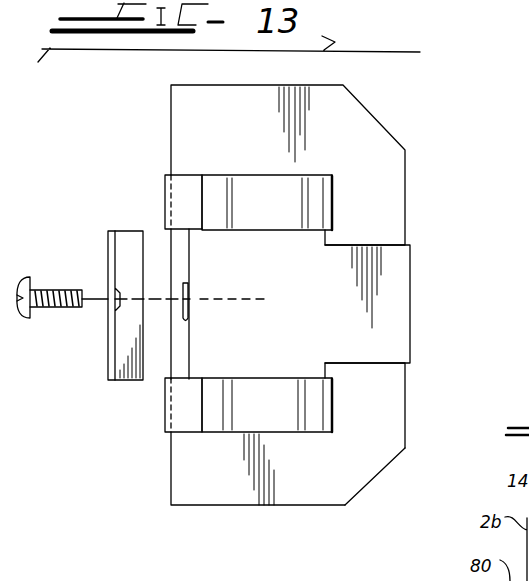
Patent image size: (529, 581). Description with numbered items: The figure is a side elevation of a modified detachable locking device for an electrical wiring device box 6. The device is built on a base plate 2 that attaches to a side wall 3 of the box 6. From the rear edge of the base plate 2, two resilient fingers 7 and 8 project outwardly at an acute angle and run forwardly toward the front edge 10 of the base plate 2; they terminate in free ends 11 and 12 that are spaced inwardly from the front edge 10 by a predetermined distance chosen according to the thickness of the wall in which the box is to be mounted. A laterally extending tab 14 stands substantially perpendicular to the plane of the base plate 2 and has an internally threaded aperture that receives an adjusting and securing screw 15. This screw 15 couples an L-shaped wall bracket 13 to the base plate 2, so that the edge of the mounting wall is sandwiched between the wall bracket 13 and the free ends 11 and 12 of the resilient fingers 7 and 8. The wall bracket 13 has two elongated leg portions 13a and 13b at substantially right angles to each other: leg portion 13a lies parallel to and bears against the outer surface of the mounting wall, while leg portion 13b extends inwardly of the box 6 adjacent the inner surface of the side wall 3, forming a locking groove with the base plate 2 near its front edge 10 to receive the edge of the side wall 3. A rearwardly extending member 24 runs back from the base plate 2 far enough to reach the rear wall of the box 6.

The base plate 2 is at (222, 350).
The side wall 3 is at (172, 97).
The electrical wiring device box 6 is at (368, 488).
The resilient finger 7 is at (285, 415).
The resilient finger 8 is at (252, 187).
The front edge 10 is at (166, 187).
The free end 11 is at (200, 412).
The free end 12 is at (202, 213).
The wall bracket 13 is at (120, 265).
The elongated leg portion 13a is at (111, 240).
The elongated leg portion 13b is at (118, 372).
The tab 14 is at (185, 322).
The adjusting and securing screw 15 is at (72, 262).
The rearwardly extending member 24 is at (404, 297).